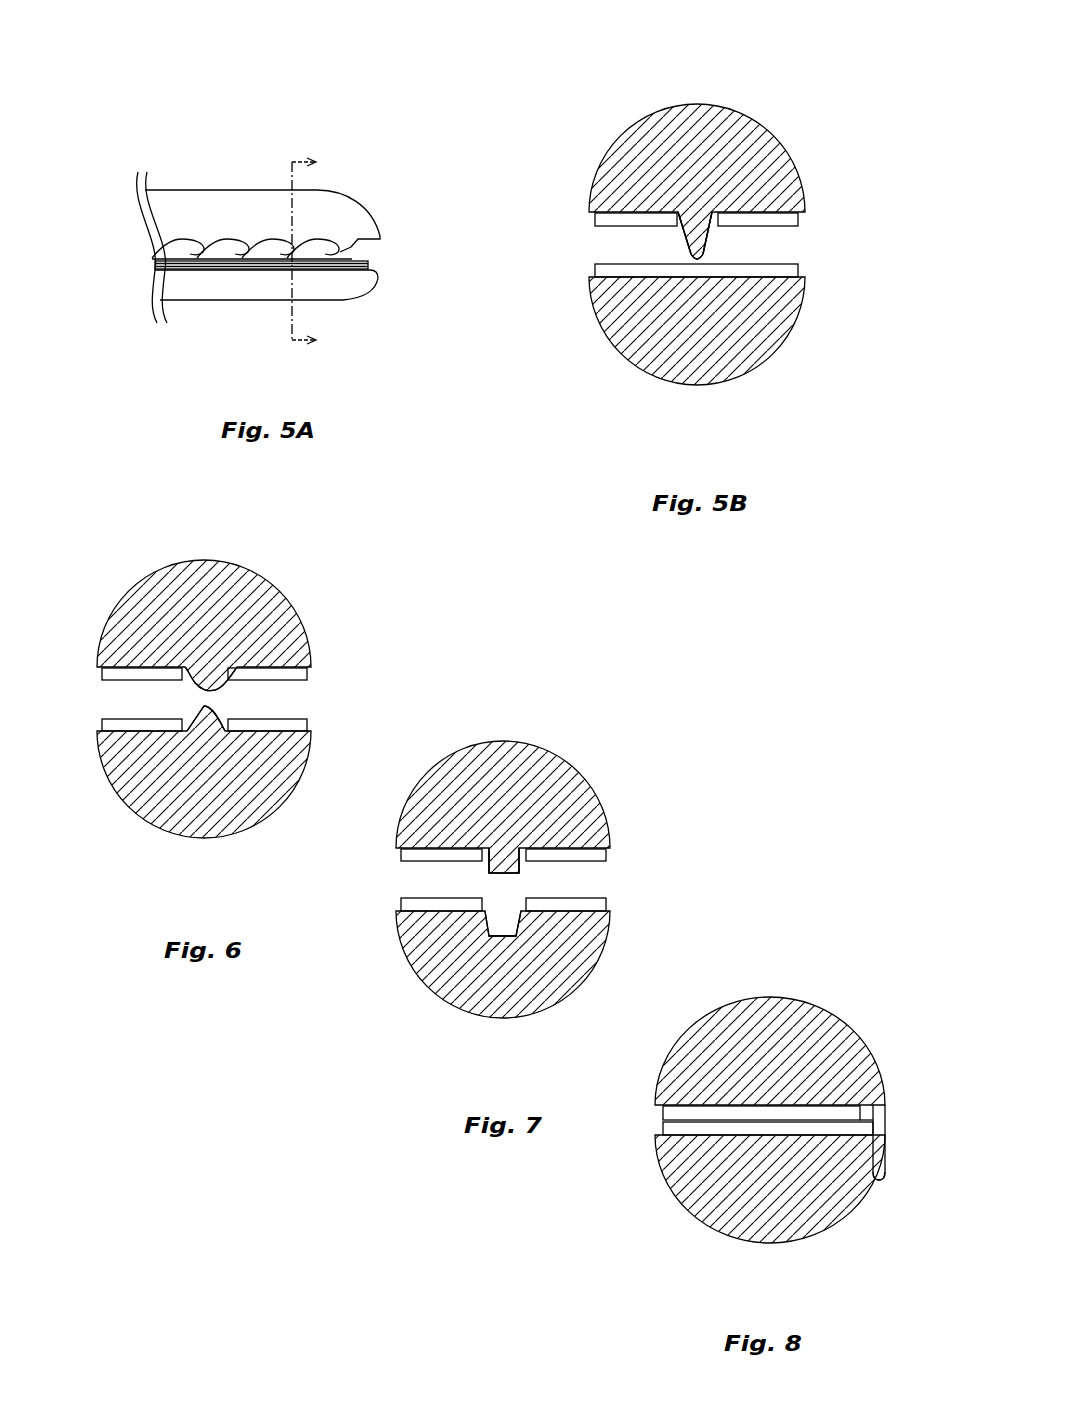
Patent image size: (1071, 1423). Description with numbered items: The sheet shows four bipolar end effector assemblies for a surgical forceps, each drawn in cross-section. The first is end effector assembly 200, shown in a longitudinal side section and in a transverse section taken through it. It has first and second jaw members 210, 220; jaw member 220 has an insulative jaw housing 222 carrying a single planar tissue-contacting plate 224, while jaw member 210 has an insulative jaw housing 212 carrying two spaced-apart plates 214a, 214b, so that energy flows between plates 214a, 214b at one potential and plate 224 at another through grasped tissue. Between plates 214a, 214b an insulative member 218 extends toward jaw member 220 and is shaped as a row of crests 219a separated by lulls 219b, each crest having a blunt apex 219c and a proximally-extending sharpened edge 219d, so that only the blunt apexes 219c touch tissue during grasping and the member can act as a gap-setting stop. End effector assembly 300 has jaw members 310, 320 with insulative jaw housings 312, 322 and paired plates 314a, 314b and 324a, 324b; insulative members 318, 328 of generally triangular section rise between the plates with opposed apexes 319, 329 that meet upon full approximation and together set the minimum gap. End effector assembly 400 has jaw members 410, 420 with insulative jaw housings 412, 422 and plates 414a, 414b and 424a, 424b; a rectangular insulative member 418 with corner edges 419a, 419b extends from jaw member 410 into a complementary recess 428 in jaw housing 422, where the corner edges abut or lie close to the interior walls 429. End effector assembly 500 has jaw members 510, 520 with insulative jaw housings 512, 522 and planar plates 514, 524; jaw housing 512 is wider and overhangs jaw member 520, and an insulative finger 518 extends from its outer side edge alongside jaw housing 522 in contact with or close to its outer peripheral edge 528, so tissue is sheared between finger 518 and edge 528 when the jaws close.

In FIG. 5A, the end effector assembly 200 is at (258, 113).
In FIG. 5B, the end effector assembly 200 is at (788, 79).
In FIG. 5A, the first jaw member 210 is at (350, 185).
In FIG. 5B, the first jaw member 210 is at (793, 138).
In FIG. 5A, the insulative jaw housing 212 is at (185, 193).
In FIG. 5B, the insulative jaw housing 212 is at (687, 119).
In FIG. 5B, the tissue-contacting plate 214a is at (609, 229).
In FIG. 5B, the tissue-contacting plate 214b is at (788, 229).
In FIG. 5B, the insulative member 218 is at (716, 243).
In FIG. 5A, the crest 219a is at (293, 249).
In FIG. 5B, the crest 219a is at (678, 250).
In FIG. 5A, the lull 219b is at (290, 247).
In FIG. 5A, the blunt apex 219c is at (233, 256).
In FIG. 5B, the blunt apex 219c is at (702, 260).
In FIG. 5A, the sharpened edge 219d is at (172, 259).
In FIG. 5A, the second jaw member 220 is at (372, 308).
In FIG. 5B, the second jaw member 220 is at (798, 341).
In FIG. 5A, the insulative jaw housing 222 is at (208, 302).
In FIG. 5B, the insulative jaw housing 222 is at (749, 365).
In FIG. 5A, the tissue-contacting plate 224 is at (370, 265).
In FIG. 5B, the tissue-contacting plate 224 is at (785, 262).
In FIG. 6, the end effector assembly 300 is at (302, 552).
In FIG. 6, the first jaw member 310 is at (115, 603).
In FIG. 6, the insulative jaw housing 312 is at (124, 631).
In FIG. 6, the tissue-contacting plate 314a is at (112, 686).
In FIG. 6, the tissue-contacting plate 314b is at (306, 686).
In FIG. 6, the insulative member 318 is at (203, 688).
In FIG. 6, the apex 319 is at (230, 688).
In FIG. 6, the second jaw member 320 is at (111, 808).
In FIG. 6, the insulative jaw housing 322 is at (124, 781).
In FIG. 6, the tissue-contacting plate 324a is at (128, 711).
In FIG. 6, the tissue-contacting plate 324b is at (298, 711).
In FIG. 6, the insulative member 328 is at (201, 720).
In FIG. 6, the apex 329 is at (217, 702).
In FIG. 7, the end effector assembly 400 is at (596, 722).
In FIG. 7, the first jaw member 410 is at (552, 739).
In FIG. 7, the insulative jaw housing 412 is at (586, 796).
In FIG. 7, the tissue-contacting plate 414a is at (408, 860).
In FIG. 7, the tissue-contacting plate 414b is at (601, 860).
In FIG. 7, the insulative member 418 is at (501, 860).
In FIG. 7, the corner edge 419a is at (489, 864).
In FIG. 7, the corner edge 419b is at (521, 864).
In FIG. 7, the second jaw member 420 is at (554, 1024).
In FIG. 7, the insulative jaw housing 422 is at (582, 967).
In FIG. 7, the tissue-contacting plate 424a is at (441, 902).
In FIG. 7, the tissue-contacting plate 424b is at (598, 909).
In FIG. 7, the recess 428 is at (508, 901).
In FIG. 7, the interior walls 429 is at (508, 934).
In FIG. 8, the end effector assembly 500 is at (840, 942).
In FIG. 8, the first jaw member 510 is at (840, 1009).
In FIG. 8, the insulative jaw housing 512 is at (779, 1009).
In FIG. 8, the tissue-contacting plate 514 is at (664, 1106).
In FIG. 8, the insulative finger 518 is at (889, 1163).
In FIG. 8, the second jaw member 520 is at (844, 1233).
In FIG. 8, the insulative jaw housing 522 is at (781, 1230).
In FIG. 8, the tissue-contacting plate 524 is at (664, 1133).
In FIG. 8, the outer peripheral edge 528 is at (886, 1125).